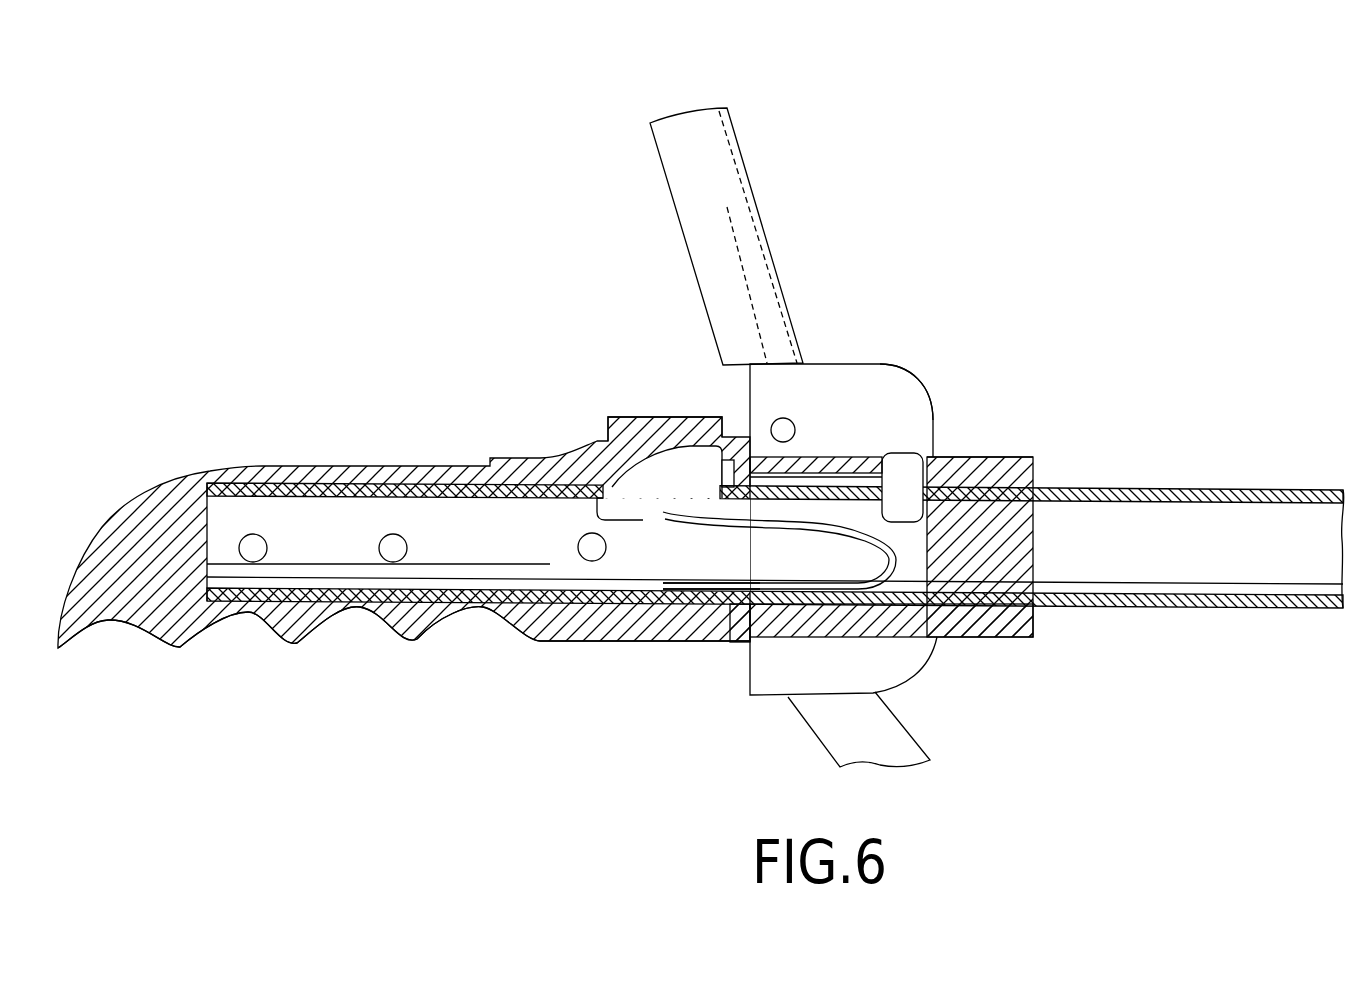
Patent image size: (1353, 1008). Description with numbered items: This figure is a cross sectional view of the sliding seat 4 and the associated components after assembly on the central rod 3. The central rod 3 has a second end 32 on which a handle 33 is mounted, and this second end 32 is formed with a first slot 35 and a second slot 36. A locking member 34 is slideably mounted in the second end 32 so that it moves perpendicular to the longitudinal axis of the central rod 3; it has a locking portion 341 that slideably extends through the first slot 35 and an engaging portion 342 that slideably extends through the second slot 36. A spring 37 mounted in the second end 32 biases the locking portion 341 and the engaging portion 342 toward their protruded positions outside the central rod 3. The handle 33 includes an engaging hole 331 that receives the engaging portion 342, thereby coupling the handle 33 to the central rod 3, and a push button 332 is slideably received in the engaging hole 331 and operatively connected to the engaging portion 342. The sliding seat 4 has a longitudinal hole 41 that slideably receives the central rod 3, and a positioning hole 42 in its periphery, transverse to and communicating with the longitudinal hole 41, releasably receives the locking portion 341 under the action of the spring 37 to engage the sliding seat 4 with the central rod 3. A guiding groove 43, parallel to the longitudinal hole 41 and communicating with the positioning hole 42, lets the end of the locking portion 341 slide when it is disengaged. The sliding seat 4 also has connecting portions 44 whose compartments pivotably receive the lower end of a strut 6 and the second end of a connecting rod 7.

The central rod 3 is at (1267, 600).
The sliding seat 4 is at (996, 434).
The strut 6 is at (697, 120).
The connecting rod 7 is at (828, 728).
The second end 32 is at (515, 597).
The handle 33 is at (468, 477).
The locking member 34 is at (867, 508).
The first slot 35 is at (960, 458).
The second slot 36 is at (597, 470).
The spring 37 is at (731, 642).
The longitudinal hole 41 is at (1012, 490).
The positioning hole 42 is at (906, 453).
The guiding groove 43 is at (818, 482).
The connecting portion 44 is at (920, 410).
The engaging hole 331 is at (617, 470).
The push button 332 is at (668, 420).
The locking portion 341 is at (890, 470).
The engaging portion 342 is at (647, 497).